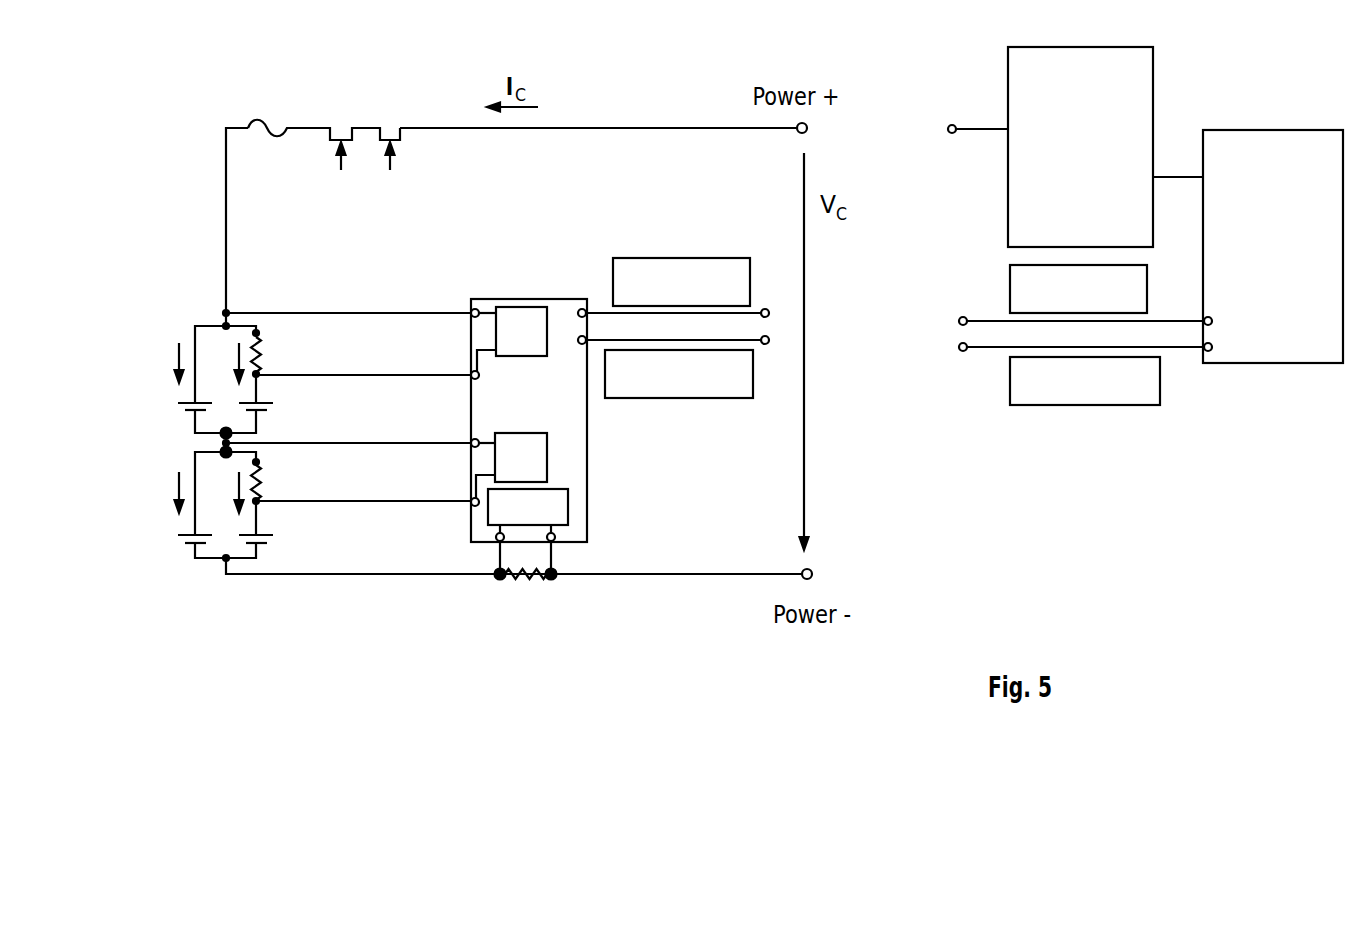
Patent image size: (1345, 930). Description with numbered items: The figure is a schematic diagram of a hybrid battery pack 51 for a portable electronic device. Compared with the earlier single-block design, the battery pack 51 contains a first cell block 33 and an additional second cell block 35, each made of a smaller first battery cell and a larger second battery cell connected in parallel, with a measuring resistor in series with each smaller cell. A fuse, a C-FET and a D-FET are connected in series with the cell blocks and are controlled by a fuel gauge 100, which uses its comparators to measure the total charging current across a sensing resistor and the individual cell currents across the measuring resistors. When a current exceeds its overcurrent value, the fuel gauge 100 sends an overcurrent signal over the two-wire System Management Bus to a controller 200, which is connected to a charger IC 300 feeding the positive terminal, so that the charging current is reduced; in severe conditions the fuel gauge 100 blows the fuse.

The hybrid battery pack 51 is at (216, 96).
The first cell block 33 is at (177, 312).
The second cell block 35 is at (163, 569).
The fuel gauge 100 is at (481, 531).
The controller 200 is at (1151, 267).
The charger IC 300 is at (1050, 147).